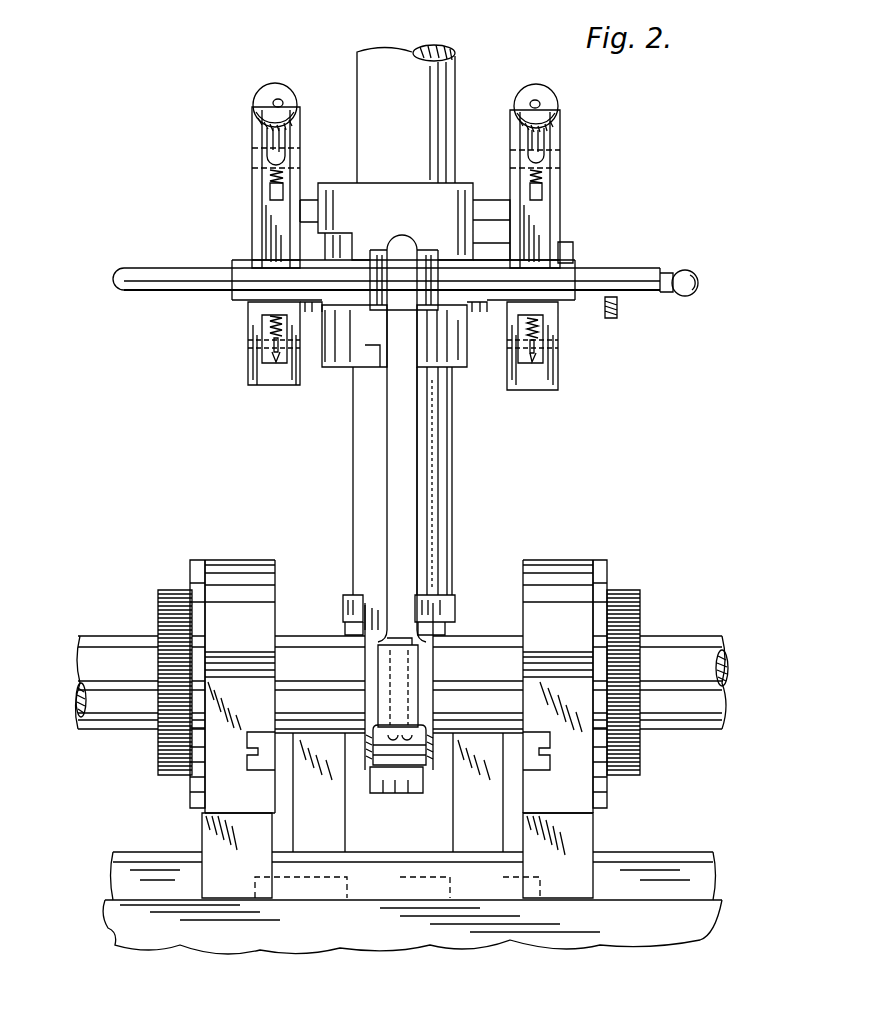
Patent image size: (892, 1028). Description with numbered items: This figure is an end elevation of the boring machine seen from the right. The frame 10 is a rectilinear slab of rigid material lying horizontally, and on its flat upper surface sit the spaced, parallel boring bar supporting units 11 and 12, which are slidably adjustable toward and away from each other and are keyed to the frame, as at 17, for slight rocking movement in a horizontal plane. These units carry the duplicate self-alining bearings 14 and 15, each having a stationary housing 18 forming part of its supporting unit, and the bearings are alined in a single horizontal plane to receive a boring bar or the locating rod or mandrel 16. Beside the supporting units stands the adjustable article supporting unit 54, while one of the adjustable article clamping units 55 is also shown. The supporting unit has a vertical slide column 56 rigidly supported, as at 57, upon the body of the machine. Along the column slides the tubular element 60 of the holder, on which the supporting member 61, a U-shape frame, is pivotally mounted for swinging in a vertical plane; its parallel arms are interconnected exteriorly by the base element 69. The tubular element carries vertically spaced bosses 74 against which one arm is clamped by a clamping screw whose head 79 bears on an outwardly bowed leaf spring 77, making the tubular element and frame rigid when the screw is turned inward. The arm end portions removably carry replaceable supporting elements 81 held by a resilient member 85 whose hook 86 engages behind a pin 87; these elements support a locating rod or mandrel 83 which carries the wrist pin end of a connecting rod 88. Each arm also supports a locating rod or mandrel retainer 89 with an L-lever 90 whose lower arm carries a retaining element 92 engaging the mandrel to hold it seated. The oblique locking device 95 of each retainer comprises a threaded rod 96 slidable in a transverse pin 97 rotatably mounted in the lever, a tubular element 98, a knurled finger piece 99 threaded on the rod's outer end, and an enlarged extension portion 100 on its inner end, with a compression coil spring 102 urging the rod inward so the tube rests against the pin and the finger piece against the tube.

The frame 10 is at (180, 936).
The boring bar supporting unit 11 is at (212, 838).
The boring bar supporting unit 12 is at (582, 843).
The self-alining bearing 14 is at (263, 631).
The self-alining bearing 15 is at (543, 593).
The locating rod or mandrel 16 is at (692, 656).
The key 17 is at (202, 872).
The stationary housing 18 is at (246, 568).
The adjustable article supporting unit 54 is at (494, 409).
The adjustable article clamping unit 55 is at (495, 799).
The vertical slide column 56 is at (440, 517).
The column support 57 is at (456, 609).
The tubular element 60 is at (462, 186).
The supporting member 61 is at (258, 380).
The base element 69 is at (494, 203).
The boss 74 is at (491, 236).
The leaf spring 77 is at (568, 252).
The head 79 is at (587, 302).
The replaceable supporting element 81 is at (550, 333).
The locating rod or mandrel 83 is at (640, 272).
The resilient member 85 is at (270, 330).
The hook 86 is at (280, 349).
The pin 87 is at (280, 350).
The connecting rod 88 is at (393, 475).
The locating rod or mandrel retainer 89 is at (241, 94).
The L-lever 90 is at (259, 178).
The retaining element 92 is at (255, 273).
The oblique locking device 95 is at (268, 143).
The threaded rod 96 is at (284, 103).
The transverse pin 97 is at (292, 159).
The tubular element 98 is at (284, 148).
The knurled finger piece 99 is at (272, 95).
The enlarged extension portion 100 is at (272, 193).
The compression coil spring 102 is at (284, 178).